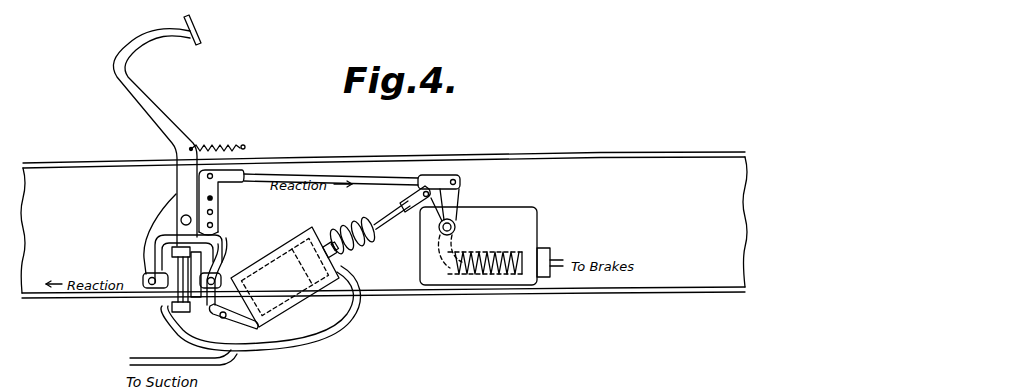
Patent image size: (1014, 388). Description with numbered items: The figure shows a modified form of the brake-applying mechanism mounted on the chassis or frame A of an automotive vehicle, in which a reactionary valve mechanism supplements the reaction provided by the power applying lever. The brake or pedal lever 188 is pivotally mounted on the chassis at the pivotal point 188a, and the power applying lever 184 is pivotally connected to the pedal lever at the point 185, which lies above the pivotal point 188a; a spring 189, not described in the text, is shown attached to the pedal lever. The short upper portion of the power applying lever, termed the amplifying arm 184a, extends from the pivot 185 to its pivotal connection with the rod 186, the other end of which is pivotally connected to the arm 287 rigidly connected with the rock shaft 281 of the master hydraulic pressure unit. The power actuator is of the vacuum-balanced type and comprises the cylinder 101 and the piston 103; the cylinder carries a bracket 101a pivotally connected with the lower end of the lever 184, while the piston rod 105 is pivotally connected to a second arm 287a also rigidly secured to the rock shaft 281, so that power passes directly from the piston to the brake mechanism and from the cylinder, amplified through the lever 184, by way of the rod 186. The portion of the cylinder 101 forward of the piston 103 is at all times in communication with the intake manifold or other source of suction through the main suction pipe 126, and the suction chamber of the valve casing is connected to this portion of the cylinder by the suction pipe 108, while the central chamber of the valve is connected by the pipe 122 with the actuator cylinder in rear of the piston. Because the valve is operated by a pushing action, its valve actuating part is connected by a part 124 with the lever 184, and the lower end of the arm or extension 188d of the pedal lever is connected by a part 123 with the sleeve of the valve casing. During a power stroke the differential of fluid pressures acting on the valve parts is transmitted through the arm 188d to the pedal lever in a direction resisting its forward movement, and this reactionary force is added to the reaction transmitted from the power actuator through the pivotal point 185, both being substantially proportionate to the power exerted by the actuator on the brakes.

The chassis or frame A is at (586, 157).
The pedal lever 188 is at (168, 117).
The return spring 189 is at (218, 137).
The rod 186 is at (318, 172).
The amplifying arm 184a is at (231, 201).
The power applying lever 184 is at (213, 252).
The pivot 185 is at (207, 198).
The pivotal point 188a is at (181, 219).
The arm or extension 188d is at (154, 254).
The connecting part 123 is at (162, 287).
The connecting part 124 is at (203, 301).
The suction pipe 108 is at (227, 261).
The bracket 101a is at (233, 309).
The cylinder 101 is at (282, 249).
The piston 103 is at (317, 237).
The piston rod 105 is at (401, 214).
The arm 287 is at (455, 200).
The rock shaft 281 is at (456, 226).
The arm 287a is at (433, 215).
The pipe 122 is at (326, 325).
The main suction pipe 126 is at (219, 360).